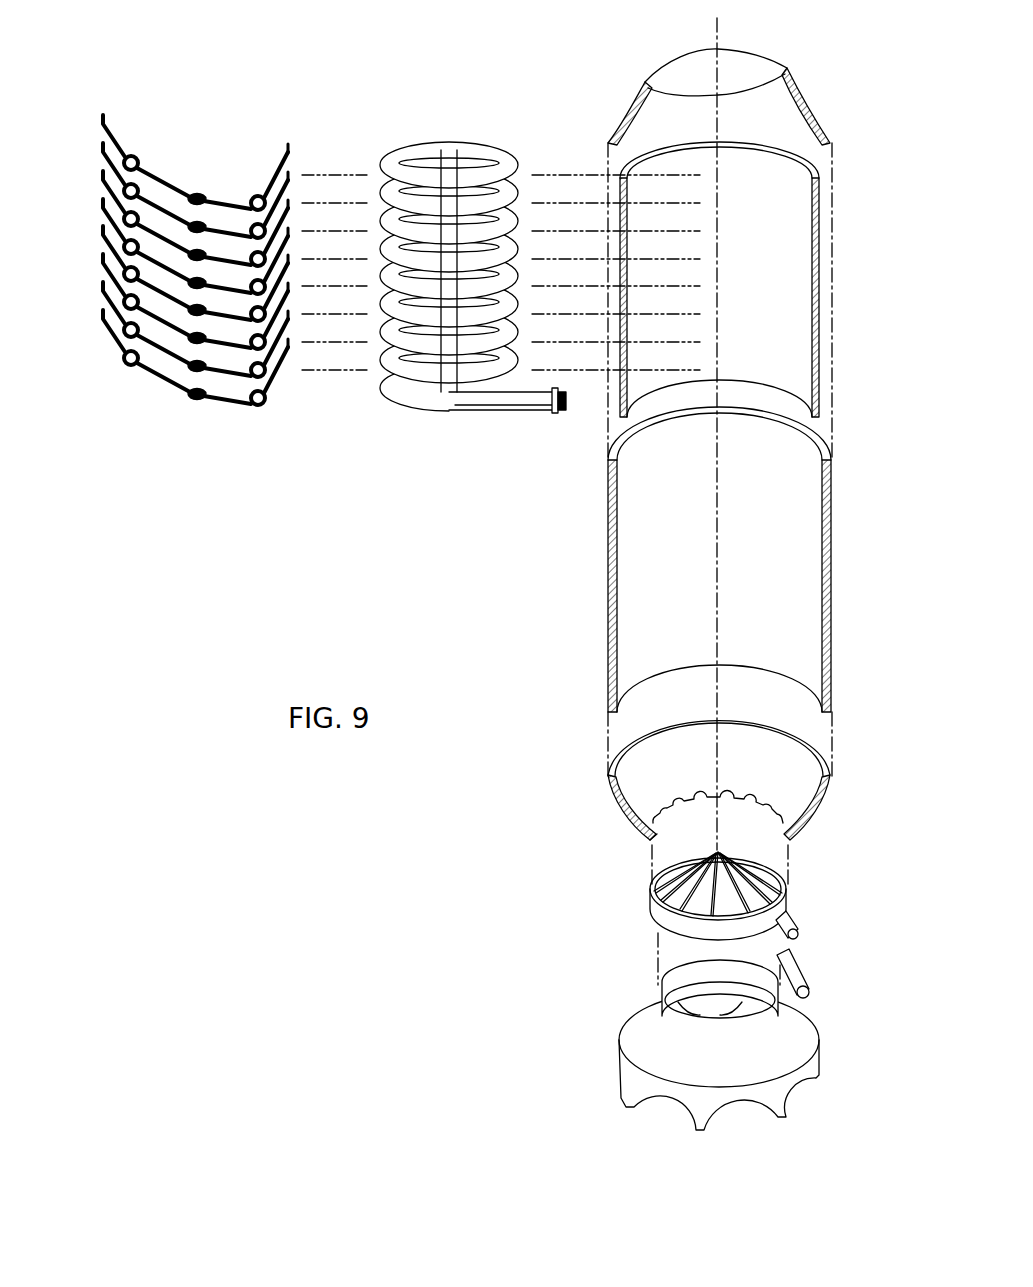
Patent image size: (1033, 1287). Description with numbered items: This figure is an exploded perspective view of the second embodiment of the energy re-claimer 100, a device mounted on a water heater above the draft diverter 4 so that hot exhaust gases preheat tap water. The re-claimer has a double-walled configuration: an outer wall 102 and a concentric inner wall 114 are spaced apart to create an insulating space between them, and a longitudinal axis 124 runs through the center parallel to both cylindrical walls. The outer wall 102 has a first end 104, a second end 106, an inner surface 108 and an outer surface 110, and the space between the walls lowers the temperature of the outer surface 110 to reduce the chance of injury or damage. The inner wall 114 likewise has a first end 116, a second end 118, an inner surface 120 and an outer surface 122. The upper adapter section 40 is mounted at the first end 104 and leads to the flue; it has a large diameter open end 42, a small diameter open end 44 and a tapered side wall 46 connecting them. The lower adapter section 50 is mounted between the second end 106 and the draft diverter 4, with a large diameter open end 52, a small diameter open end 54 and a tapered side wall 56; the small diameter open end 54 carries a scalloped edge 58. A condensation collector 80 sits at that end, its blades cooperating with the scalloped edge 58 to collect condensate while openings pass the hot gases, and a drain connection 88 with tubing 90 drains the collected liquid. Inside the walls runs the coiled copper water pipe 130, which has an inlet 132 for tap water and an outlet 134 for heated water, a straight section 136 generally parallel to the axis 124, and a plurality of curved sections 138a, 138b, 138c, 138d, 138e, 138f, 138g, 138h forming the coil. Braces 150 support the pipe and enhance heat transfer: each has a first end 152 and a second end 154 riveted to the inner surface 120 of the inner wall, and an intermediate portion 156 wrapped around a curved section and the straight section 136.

The energy re-claimer 100 is at (597, 53).
The longitudinal axis 124 is at (722, 36).
The upper adapter section 40 is at (721, 88).
The large diameter open end 42 is at (690, 73).
The small diameter open end 44 is at (783, 72).
The tapered side wall 46 is at (628, 118).
The inner wall 114 is at (757, 278).
The first end 116 is at (807, 163).
The inner surface 120 is at (785, 232).
The outer surface 122 is at (815, 335).
The second end 118 is at (795, 398).
The outer wall 102 is at (756, 564).
The first end 104 is at (820, 453).
The inner surface 108 is at (808, 503).
The outer surface 110 is at (833, 565).
The second end 106 is at (818, 702).
The lower adapter section 50 is at (726, 796).
The large diameter open end 52 is at (828, 775).
The small diameter open end 54 is at (652, 842).
The tapered side wall 56 is at (625, 805).
The scalloped edge 58 is at (740, 803).
The condensation collector 80 is at (747, 925).
The drain connection 88 is at (782, 930).
The tubing 90 is at (797, 970).
The draft diverter 4 is at (633, 1023).
The water pipe 130 is at (477, 266).
The inlet 132 is at (490, 400).
The outlet 134 is at (555, 393).
The straight section 136 is at (450, 365).
The curved section 138a is at (485, 168).
The curved section 138b is at (513, 208).
The curved section 138c is at (513, 236).
The curved section 138d is at (513, 264).
The curved section 138e is at (513, 291).
The curved section 138f is at (513, 319).
The curved section 138g is at (513, 347).
The curved section 138h is at (513, 375).
The brace 150 is at (192, 255).
The first end 152 is at (103, 124).
The second end 154 is at (290, 152).
The intermediate portion 156 is at (163, 188).